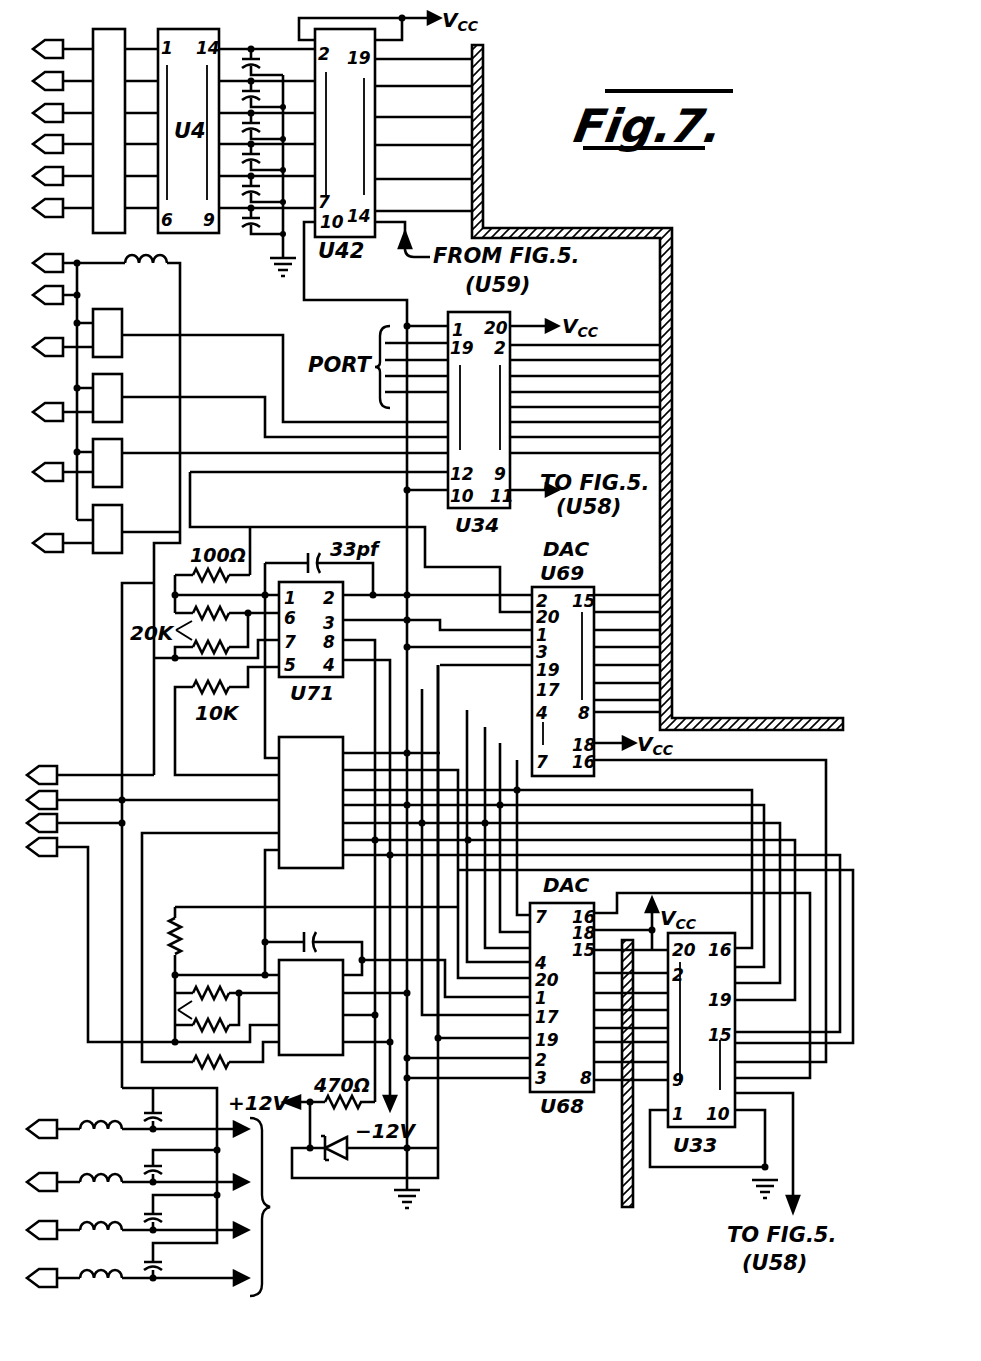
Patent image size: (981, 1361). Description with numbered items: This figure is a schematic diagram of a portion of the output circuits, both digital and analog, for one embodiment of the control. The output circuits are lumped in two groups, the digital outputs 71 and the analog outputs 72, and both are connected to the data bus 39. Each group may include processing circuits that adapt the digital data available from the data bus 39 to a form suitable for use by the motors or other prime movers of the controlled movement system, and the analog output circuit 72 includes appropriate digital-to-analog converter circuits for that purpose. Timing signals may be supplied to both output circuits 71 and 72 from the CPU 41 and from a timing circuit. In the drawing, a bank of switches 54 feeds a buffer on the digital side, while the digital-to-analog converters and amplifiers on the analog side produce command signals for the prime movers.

The data bus 39 is at (484, 108).
The switches 54 is at (109, 131).
The digital outputs 71 is at (247, 311).
The analog outputs 72 is at (224, 884).
The CPU 41 is at (199, 1192).